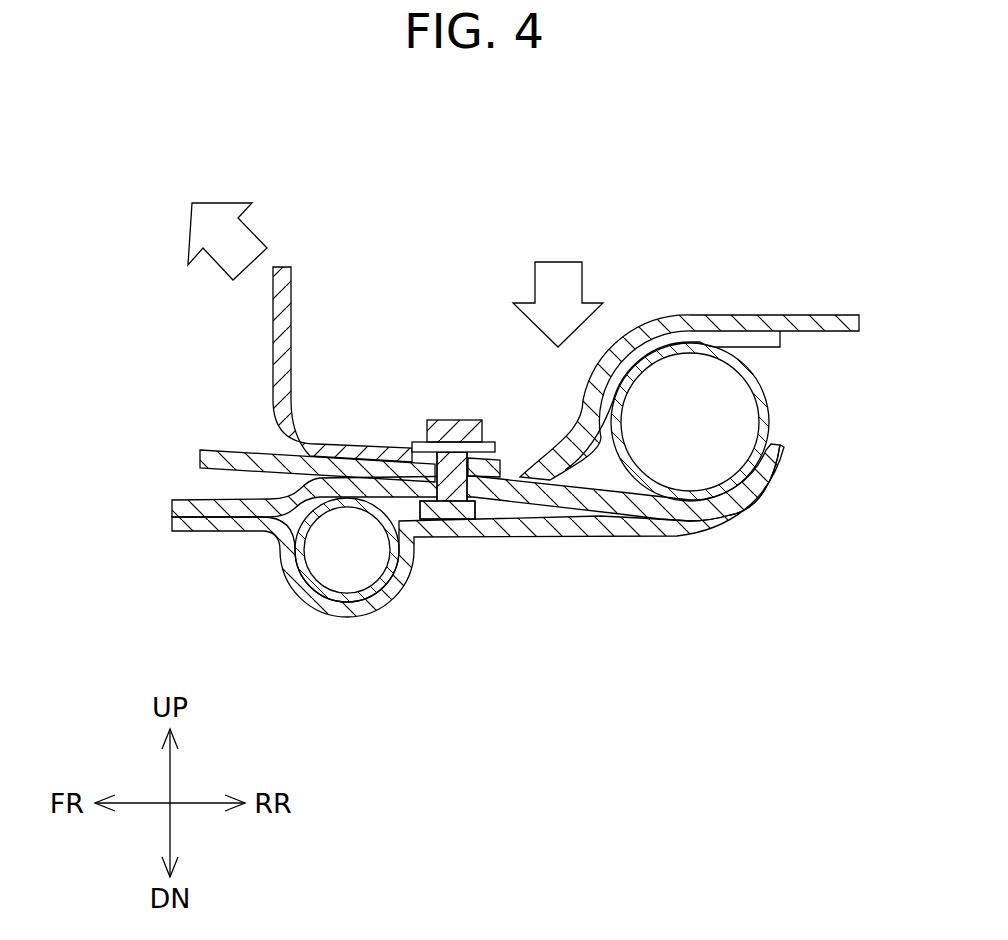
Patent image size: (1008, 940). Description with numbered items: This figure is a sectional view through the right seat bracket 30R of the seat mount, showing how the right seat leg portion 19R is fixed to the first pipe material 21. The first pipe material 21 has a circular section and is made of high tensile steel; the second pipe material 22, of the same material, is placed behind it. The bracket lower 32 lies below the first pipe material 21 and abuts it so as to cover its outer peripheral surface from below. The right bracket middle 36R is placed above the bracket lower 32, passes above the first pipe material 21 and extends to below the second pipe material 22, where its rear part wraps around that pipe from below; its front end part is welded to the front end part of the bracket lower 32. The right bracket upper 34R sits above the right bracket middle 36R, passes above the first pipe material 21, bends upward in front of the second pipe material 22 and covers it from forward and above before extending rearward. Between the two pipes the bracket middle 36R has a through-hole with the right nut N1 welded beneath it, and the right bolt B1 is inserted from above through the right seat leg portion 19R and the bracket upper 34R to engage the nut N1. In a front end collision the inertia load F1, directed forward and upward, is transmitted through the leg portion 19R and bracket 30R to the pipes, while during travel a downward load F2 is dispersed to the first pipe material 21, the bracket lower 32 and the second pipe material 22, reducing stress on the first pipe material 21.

The right seat leg portion 19R is at (274, 346).
The right seat bracket 30R is at (470, 350).
The right bracket upper 34R is at (800, 322).
The right bracket middle 36R is at (210, 500).
The bracket lower 32 is at (222, 531).
The first pipe material 21 is at (340, 568).
The second pipe material 22 is at (733, 410).
The right bolt B1 is at (453, 428).
The right nut N1 is at (477, 523).
The load F1 is at (243, 244).
The load F2 is at (547, 268).